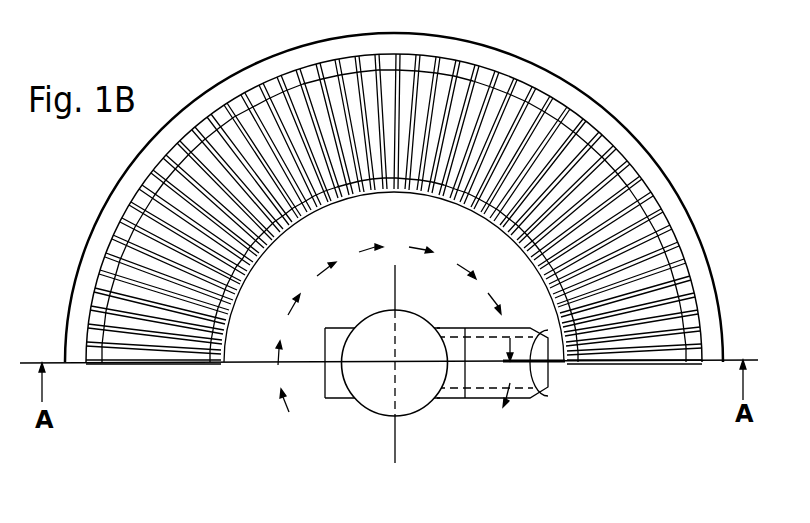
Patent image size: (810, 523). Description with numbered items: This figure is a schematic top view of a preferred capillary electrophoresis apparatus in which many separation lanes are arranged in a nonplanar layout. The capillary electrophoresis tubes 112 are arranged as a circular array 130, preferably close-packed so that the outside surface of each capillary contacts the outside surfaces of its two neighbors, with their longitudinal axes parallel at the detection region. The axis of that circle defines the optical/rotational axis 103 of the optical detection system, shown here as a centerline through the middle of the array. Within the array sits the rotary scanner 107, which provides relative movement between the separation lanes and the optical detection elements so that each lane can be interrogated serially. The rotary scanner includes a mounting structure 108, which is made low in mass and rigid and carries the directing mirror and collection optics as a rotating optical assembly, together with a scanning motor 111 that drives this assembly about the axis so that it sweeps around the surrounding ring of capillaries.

The circular array 130 is at (663, 162).
The mounting structure 108 is at (490, 83).
The capillary electrophoresis tubes 112 is at (563, 153).
The rotary scanner 107 is at (472, 400).
The scanning motor 111 is at (365, 407).
The optical/rotational axis 103 is at (397, 288).